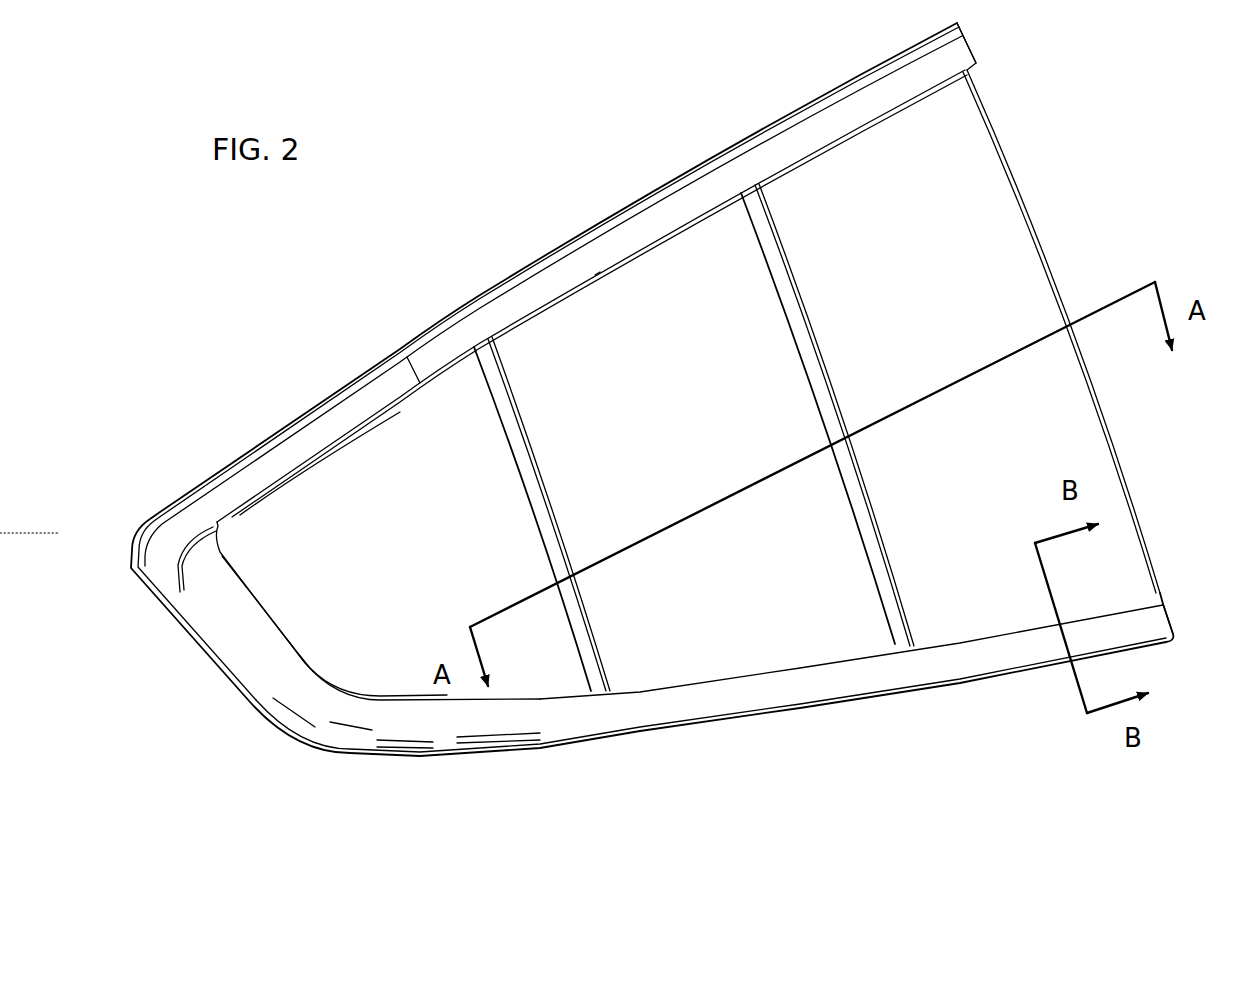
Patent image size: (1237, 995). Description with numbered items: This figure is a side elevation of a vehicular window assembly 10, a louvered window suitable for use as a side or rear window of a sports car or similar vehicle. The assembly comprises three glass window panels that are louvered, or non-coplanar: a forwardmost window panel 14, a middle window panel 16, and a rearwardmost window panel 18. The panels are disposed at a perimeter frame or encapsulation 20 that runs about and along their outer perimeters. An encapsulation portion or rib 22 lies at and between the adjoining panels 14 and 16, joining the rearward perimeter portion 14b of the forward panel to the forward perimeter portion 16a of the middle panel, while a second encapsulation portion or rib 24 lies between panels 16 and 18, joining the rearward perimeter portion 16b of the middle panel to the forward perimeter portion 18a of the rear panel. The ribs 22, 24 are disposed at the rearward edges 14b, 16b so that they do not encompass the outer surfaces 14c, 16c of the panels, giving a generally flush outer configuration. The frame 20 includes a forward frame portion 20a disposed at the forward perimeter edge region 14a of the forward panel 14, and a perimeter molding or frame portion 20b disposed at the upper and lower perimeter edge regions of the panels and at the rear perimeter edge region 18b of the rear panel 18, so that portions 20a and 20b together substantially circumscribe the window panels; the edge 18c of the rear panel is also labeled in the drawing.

The window assembly 10 is at (551, 180).
The forwardmost window panel 14 is at (954, 232).
The forward perimeter edge region 14a is at (1041, 277).
The rearward perimeter portion 14b is at (823, 357).
The outer surface 14c is at (1037, 433).
The middle window panel 16 is at (644, 327).
The forward perimeter portion 16a is at (797, 377).
The rearward perimeter portion 16b is at (550, 493).
The outer surface 16c is at (737, 632).
The rearwardmost window panel 18 is at (333, 612).
The forward perimeter portion 18a is at (522, 487).
The rear perimeter edge region 18b is at (255, 590).
The upper edge of inner frame portion 18c is at (332, 487).
The perimeter frame or encapsulation 20 is at (442, 308).
The forward frame portion 20a is at (1150, 537).
The perimeter molding or frame portion 20b is at (858, 687).
The encapsulation portion or rib 22 is at (860, 510).
The encapsulation portion or rib 24 is at (598, 615).